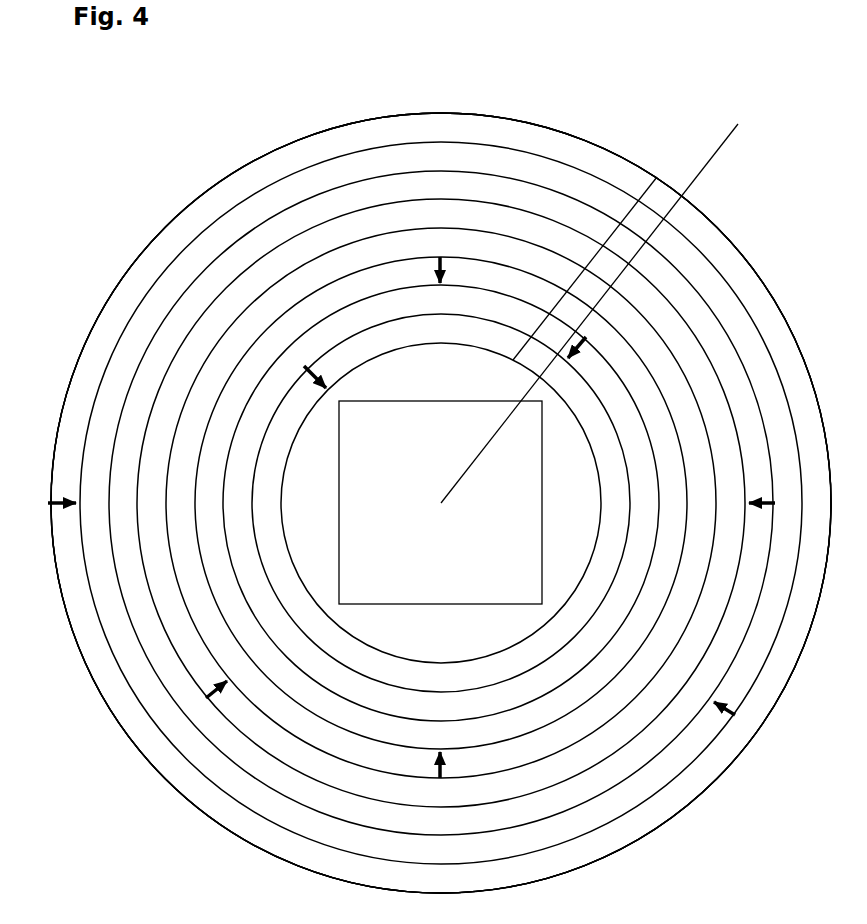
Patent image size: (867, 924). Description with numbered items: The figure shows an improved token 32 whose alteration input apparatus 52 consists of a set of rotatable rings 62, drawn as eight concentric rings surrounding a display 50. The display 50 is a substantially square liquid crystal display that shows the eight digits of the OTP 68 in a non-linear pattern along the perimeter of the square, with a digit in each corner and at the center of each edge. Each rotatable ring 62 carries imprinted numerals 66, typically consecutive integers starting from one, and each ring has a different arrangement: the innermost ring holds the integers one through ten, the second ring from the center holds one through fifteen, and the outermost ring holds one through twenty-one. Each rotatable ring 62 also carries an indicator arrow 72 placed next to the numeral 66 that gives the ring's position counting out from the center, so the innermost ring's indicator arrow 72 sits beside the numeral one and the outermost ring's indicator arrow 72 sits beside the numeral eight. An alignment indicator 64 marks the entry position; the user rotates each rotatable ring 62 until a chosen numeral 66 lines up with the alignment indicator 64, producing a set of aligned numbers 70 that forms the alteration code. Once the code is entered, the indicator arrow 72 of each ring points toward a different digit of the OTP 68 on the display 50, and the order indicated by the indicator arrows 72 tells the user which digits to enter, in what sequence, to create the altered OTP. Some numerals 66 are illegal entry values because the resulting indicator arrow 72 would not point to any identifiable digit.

The improved token 32 is at (102, 145).
The display 50 is at (437, 400).
The alteration input apparatus 52 is at (737, 243).
The rotatable ring 62 is at (229, 162).
The alignment indicator 64 is at (712, 158).
The numerals 66 is at (71, 377).
The OTP 68 is at (347, 472).
The set of aligned numbers 70 is at (687, 193).
The indicator arrow 72 is at (735, 715).